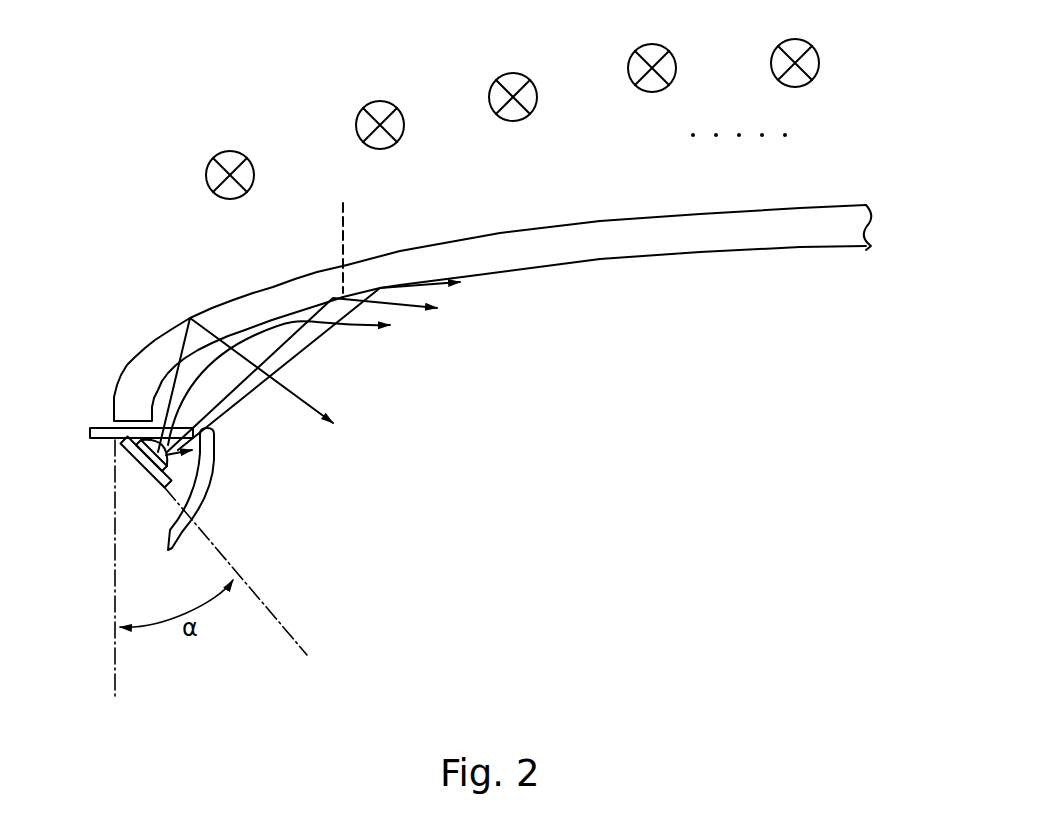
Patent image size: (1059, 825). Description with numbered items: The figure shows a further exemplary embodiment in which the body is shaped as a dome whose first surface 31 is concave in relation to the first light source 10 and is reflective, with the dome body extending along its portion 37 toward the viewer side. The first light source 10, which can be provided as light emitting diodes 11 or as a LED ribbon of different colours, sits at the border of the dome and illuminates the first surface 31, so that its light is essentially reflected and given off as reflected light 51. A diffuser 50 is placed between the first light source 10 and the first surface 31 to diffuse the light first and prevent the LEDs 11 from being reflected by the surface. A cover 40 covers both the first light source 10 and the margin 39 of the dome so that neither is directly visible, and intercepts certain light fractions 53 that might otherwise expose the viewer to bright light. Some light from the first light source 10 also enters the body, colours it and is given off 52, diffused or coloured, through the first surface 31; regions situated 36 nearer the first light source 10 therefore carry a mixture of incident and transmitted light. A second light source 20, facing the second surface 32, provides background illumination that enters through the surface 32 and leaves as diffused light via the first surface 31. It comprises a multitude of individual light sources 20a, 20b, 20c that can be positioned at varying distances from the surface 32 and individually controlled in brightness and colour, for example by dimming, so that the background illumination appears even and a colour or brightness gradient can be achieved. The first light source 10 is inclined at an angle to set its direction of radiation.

The first light source 10 is at (126, 497).
The light emitting diodes 11 is at (137, 458).
The second light source 20 is at (222, 151).
The individual light source 20a is at (247, 193).
The individual light source 20b is at (397, 145).
The individual light source 20c is at (520, 121).
The first surface 31 is at (832, 249).
The second surface 32 is at (832, 209).
The regions situated nearer the first light source 36 is at (227, 307).
The straight portion of light guide 37 is at (607, 229).
The margin of the dome 39 is at (113, 420).
The cover 40 is at (208, 487).
The diffuser 50 is at (90, 432).
The reflected light 51 is at (420, 310).
The light given off 52 is at (332, 428).
The light fractions 53 is at (187, 456).